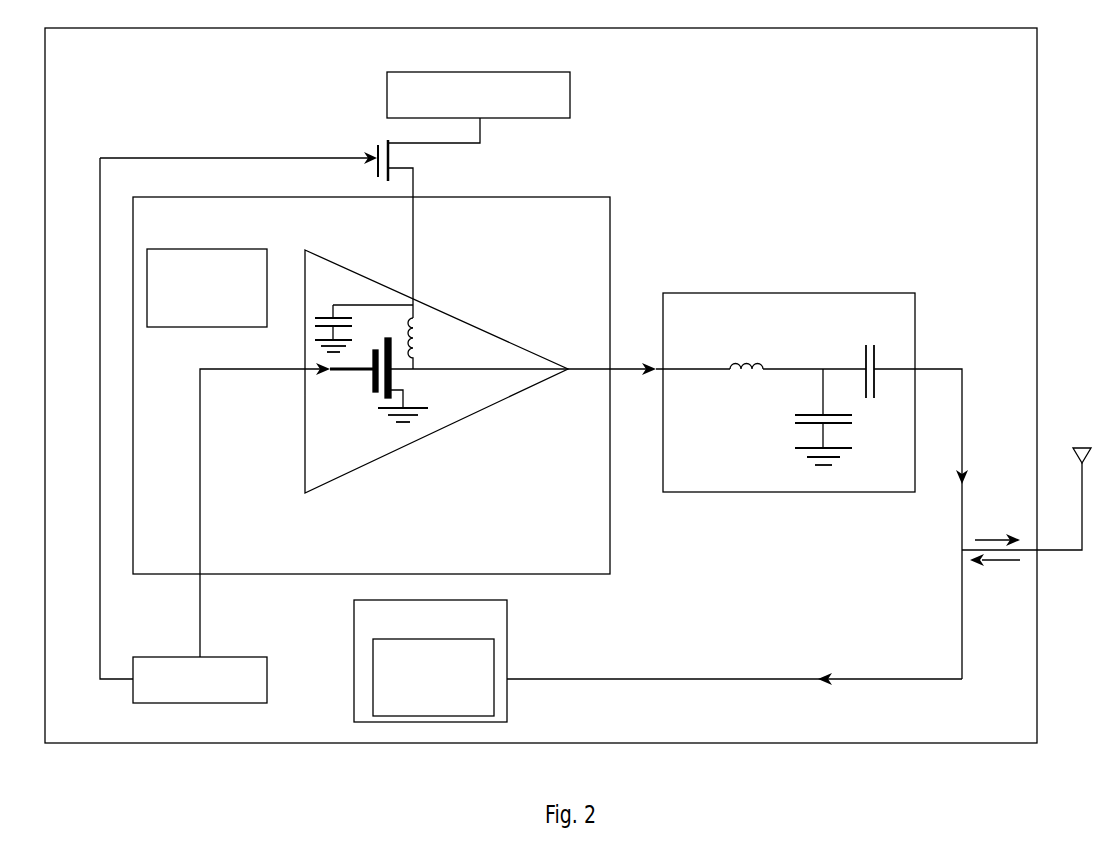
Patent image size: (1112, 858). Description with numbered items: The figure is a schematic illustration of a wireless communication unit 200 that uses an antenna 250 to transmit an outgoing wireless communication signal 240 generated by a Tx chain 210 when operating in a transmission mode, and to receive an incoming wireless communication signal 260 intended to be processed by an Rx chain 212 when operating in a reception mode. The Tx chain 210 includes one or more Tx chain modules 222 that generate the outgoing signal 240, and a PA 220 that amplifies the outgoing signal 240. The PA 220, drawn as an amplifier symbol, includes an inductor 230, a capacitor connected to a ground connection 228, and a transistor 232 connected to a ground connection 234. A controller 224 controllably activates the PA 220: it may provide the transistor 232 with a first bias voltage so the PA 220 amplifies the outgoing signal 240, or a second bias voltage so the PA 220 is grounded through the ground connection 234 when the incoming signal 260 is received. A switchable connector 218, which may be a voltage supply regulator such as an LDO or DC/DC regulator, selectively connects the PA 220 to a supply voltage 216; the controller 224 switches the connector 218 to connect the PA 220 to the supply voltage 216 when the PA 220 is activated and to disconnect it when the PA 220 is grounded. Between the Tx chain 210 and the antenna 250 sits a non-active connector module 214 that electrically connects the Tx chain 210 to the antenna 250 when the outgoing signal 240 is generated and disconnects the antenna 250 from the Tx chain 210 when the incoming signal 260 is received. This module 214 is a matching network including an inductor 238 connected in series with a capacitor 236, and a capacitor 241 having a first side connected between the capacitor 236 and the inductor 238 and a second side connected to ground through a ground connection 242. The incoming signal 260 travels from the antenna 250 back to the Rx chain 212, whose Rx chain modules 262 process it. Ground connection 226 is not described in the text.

The wireless communication unit 200 is at (126, 785).
The Tx chain 210 is at (612, 214).
The Rx chain 212 is at (509, 643).
The non-active connector module 214 is at (917, 311).
The supply voltage 216 is at (571, 85).
The switchable connector 218 is at (375, 148).
The PA 220 is at (484, 331).
The Tx chain modules 222 is at (190, 330).
The controller 224 is at (270, 680).
The capacitor 226 is at (328, 316).
The ground connection 228 is at (318, 345).
The inductor 230 is at (419, 334).
The transistor 232 is at (371, 382).
The ground connection 234 is at (428, 409).
The capacitor 236 is at (863, 354).
The inductor 238 is at (738, 373).
The outgoing wireless communication signal 240 is at (629, 369).
The capacitor 241 is at (850, 425).
The ground connection 242 is at (843, 458).
The antenna 250 is at (1080, 555).
The incoming wireless communication signal 260 is at (993, 566).
The Rx chain modules 262 is at (373, 698).